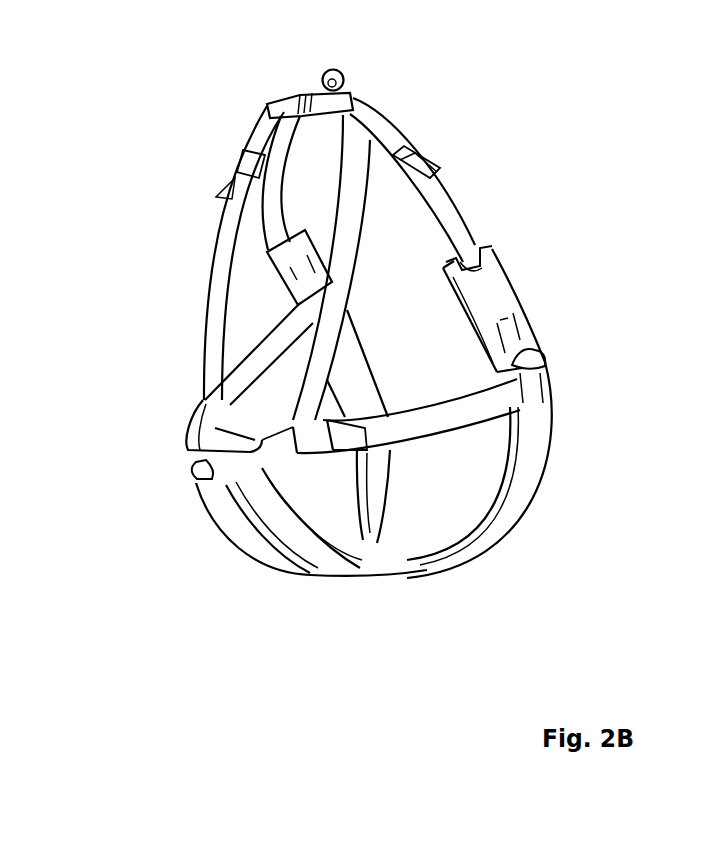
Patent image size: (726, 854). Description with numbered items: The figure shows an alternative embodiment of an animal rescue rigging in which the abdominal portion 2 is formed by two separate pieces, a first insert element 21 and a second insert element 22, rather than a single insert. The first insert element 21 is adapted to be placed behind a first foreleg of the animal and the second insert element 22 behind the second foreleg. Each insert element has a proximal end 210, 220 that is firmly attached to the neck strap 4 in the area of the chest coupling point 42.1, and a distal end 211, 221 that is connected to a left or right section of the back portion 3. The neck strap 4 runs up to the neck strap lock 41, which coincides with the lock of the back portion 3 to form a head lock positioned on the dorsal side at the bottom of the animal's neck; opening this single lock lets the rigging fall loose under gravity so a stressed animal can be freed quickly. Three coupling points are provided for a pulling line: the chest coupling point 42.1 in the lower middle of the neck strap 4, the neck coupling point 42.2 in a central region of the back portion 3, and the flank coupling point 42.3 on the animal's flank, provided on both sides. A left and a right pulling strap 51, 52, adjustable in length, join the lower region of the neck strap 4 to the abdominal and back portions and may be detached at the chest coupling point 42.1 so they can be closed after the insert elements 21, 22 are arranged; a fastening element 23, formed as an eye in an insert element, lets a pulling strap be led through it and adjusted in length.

The abdominal portion 2 is at (634, 458).
The back portion 3 is at (438, 192).
The neck strap 4 is at (215, 277).
The first insert element 21 is at (520, 515).
The second insert element 22 is at (307, 567).
The fastening element 23 is at (520, 300).
The neck strap lock 41 is at (310, 92).
The chest coupling point 42.1 is at (192, 472).
The neck coupling point 42.2 is at (350, 78).
The flank coupling point 42.3 is at (543, 358).
The left pulling strap 51 is at (490, 405).
The right pulling strap 52 is at (270, 343).
The proximal end of first insert element 210 is at (263, 497).
The distal end of first insert element 211 is at (495, 270).
The proximal end of second insert element 220 is at (210, 497).
The distal end of second insert element 221 is at (268, 247).